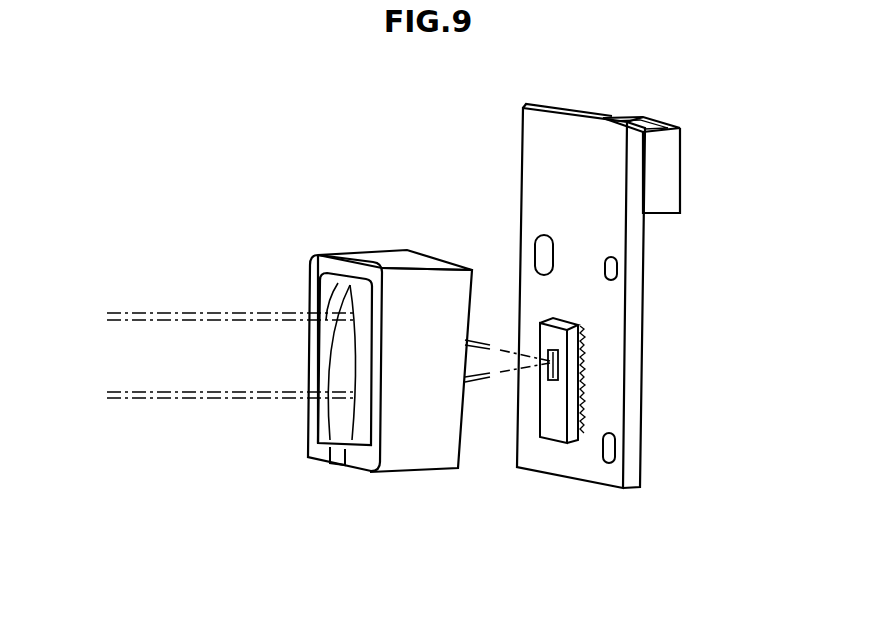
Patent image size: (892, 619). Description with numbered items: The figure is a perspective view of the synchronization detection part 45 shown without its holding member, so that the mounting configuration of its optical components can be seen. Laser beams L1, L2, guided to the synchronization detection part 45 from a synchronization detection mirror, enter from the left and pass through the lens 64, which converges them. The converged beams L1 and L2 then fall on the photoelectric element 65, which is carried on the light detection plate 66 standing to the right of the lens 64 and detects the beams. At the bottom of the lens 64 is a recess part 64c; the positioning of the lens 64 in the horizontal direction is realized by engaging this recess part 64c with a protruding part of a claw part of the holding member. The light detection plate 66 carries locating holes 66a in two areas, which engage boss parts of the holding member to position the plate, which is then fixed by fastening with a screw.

The synchronization detection part 45 is at (374, 123).
The lens 64 is at (352, 295).
The recess part 64c is at (322, 462).
The photoelectric element 65 is at (560, 365).
The light detection plate 66 is at (543, 165).
The locating holes 66a is at (618, 268).
The laser beam L1 is at (143, 312).
The laser beam L2 is at (143, 398).